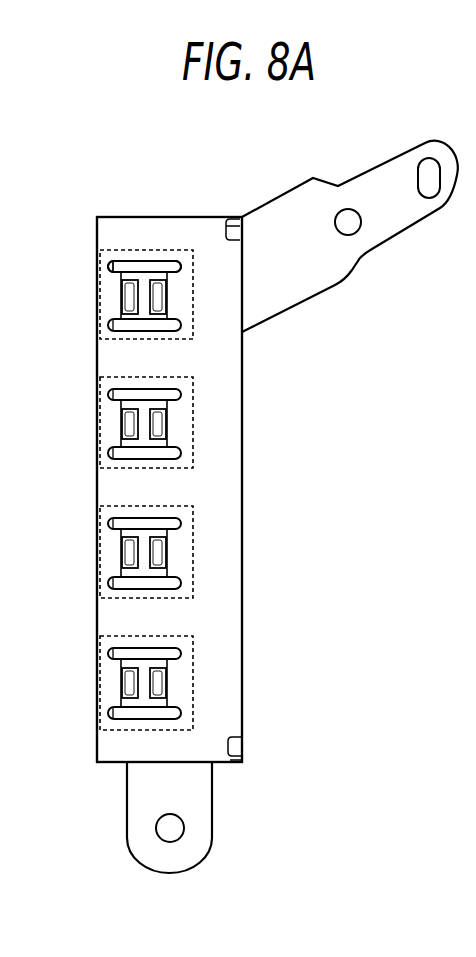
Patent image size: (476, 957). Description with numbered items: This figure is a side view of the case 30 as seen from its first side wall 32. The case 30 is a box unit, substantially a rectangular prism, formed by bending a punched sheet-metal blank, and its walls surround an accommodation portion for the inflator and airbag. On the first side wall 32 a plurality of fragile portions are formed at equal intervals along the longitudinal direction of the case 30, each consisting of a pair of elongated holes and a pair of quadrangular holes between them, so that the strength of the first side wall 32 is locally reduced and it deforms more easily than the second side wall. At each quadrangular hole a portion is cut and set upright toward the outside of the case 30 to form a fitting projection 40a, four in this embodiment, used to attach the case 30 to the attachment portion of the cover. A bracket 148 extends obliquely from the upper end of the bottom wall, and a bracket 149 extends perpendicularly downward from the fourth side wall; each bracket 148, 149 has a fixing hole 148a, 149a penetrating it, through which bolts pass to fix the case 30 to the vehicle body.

The case 30 is at (204, 209).
The first side wall 32 is at (243, 421).
The fitting projection 40a is at (176, 272).
The bracket 148 is at (318, 290).
The fixing hole 148a is at (355, 228).
The bracket 149 is at (205, 816).
The fixing hole 149a is at (178, 835).